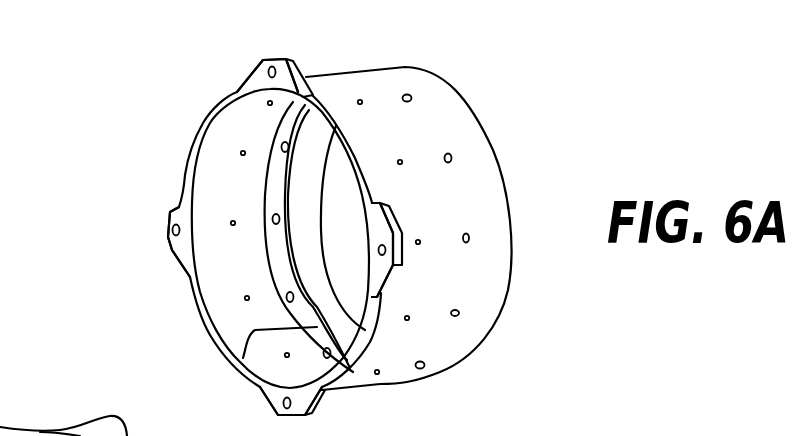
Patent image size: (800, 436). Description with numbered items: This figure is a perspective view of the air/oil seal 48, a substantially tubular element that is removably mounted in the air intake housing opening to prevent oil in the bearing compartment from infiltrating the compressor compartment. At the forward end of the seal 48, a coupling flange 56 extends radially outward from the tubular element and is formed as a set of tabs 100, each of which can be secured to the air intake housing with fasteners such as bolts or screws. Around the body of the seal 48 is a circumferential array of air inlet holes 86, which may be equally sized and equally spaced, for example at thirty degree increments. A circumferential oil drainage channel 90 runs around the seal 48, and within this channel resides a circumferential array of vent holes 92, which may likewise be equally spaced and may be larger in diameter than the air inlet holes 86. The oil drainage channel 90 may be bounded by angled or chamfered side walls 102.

The seal 48 is at (519, 137).
The coupling flange 56 is at (253, 60).
The air inlet holes 86 is at (231, 223).
The oil drainage channel 90 is at (283, 263).
The vent holes 92 is at (273, 218).
The tabs 100 is at (299, 68).
The side walls 102 is at (242, 360).